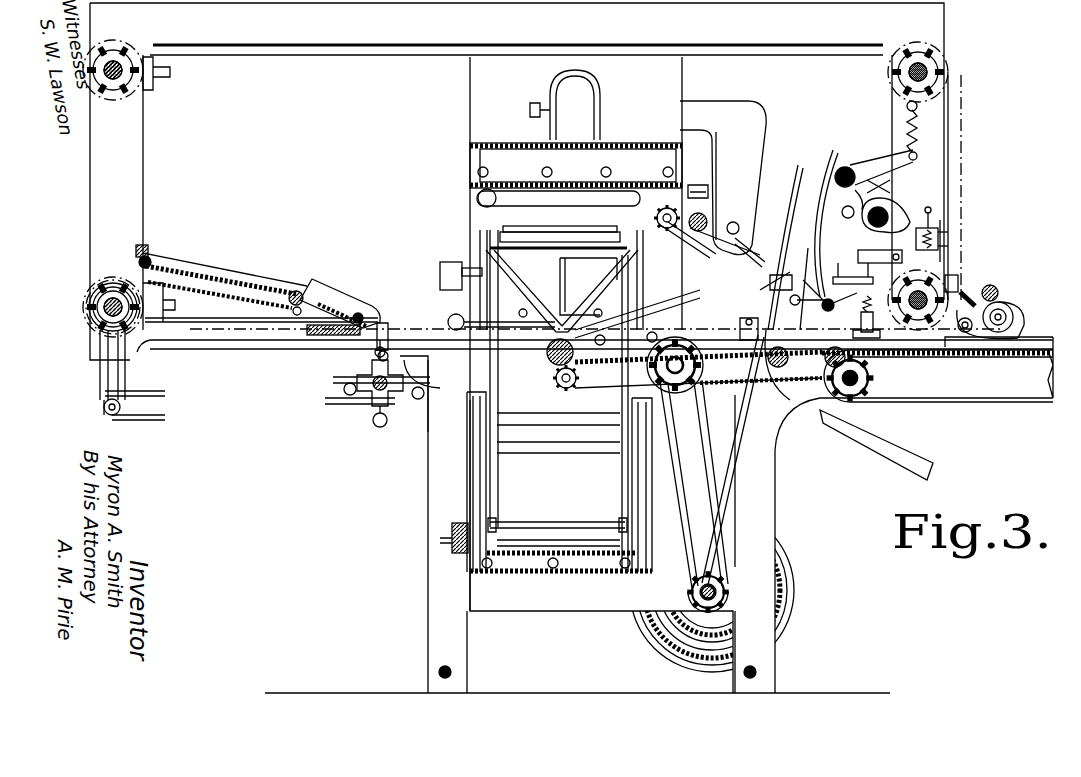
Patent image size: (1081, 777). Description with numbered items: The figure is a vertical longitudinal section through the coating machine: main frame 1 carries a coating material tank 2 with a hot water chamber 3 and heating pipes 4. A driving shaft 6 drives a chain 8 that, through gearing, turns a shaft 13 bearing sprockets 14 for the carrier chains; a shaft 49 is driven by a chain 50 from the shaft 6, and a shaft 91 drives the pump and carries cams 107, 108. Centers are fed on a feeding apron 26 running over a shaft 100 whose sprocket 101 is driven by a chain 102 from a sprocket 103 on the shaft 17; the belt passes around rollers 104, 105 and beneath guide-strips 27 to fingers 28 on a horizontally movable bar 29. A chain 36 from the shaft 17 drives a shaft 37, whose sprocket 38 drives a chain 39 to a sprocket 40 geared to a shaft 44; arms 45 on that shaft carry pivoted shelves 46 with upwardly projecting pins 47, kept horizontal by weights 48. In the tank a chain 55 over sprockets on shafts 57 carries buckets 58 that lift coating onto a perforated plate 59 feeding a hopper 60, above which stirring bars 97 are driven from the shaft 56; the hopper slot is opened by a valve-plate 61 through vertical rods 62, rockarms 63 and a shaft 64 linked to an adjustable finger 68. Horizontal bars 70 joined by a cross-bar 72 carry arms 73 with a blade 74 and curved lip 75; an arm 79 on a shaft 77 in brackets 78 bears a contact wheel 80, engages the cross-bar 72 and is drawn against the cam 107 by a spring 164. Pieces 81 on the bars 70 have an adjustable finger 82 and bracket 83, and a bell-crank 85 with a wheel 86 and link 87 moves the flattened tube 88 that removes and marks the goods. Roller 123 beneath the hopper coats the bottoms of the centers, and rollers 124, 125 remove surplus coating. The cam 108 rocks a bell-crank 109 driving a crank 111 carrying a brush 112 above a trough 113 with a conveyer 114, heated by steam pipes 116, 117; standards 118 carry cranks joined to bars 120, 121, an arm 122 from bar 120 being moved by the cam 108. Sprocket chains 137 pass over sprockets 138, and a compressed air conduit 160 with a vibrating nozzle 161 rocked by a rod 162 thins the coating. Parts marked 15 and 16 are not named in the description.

The main frame 1 is at (571, 348).
The coating material tank 2 is at (496, 514).
The hot water chamber 3 is at (470, 473).
The heating pipes 4 is at (505, 570).
The driving shaft 6 is at (728, 592).
The chain 8 is at (712, 460).
The shaft 13 is at (955, 264).
The sprockets 14 is at (115, 45).
The shaft 15 is at (906, 78).
The shaft 16 is at (104, 72).
The shaft 17 is at (104, 307).
The feeding apron 26 is at (240, 292).
The guide-strips 27 is at (334, 293).
The fingers 28 is at (388, 328).
The horizontally movable bar 29 is at (330, 350).
The chain 36 is at (100, 382).
The shaft 37 is at (130, 420).
The second sprocket 38 is at (104, 408).
The chain 39 is at (160, 393).
The sprocket 40 is at (372, 406).
The shaft 44 is at (395, 402).
The arms 45 is at (428, 358).
The shelves 46 is at (371, 378).
The upwardly projecting pins 47 is at (344, 392).
The weights 48 is at (382, 428).
The shaft 49 is at (706, 221).
The chain 50 is at (698, 185).
The chain 55 is at (636, 236).
The shaft 56 is at (446, 264).
The shafts 57 is at (561, 492).
The buckets 58 is at (576, 232).
The perforated plate 59 is at (562, 291).
The hopper 60 is at (580, 286).
The valve-plate 61 is at (558, 324).
The vertical rods 62 is at (588, 269).
The rockarms 63 is at (610, 269).
The shaft 64 is at (610, 230).
The adjustable finger 68 is at (759, 332).
The horizontal bars 70 is at (768, 358).
The cross-bar 72 is at (828, 311).
The arms 73 is at (606, 329).
The blade 74 is at (678, 345).
The curved lip 75 is at (548, 354).
The shaft 77 is at (842, 168).
The brackets 78 is at (890, 188).
The arm 79 is at (822, 202).
The contact wheel 80 is at (868, 166).
The pieces 81 is at (805, 306).
The adjustable finger 82 is at (778, 280).
The adjustable bracket 83 is at (874, 320).
The bell-crank 85 is at (822, 386).
The wheel 86 is at (805, 280).
The link 87 is at (914, 294).
The flattened tube 88 is at (886, 364).
The shaft 91 is at (886, 208).
The stirring bars 97 is at (515, 297).
The shaft 100 is at (150, 260).
The sprocket 101 is at (138, 250).
The driving chain 102 is at (108, 275).
The sprocket 103 is at (98, 294).
The roller 104 is at (297, 290).
The roller 105 is at (359, 313).
The cam 107 is at (926, 224).
The cam 108 is at (948, 230).
The bell-crank 109 is at (948, 245).
The crank 111 is at (958, 282).
The brush 112 is at (1002, 292).
The trough 113 is at (1020, 338).
The conveyer 114 is at (1023, 305).
The steam pipe 116 is at (966, 334).
The steam pipe 117 is at (978, 295).
The standards 118 is at (873, 281).
The bar 120 is at (752, 248).
The bar 121 is at (796, 182).
The arm 122 is at (880, 247).
The roller 123 is at (556, 380).
The roller 124 is at (705, 392).
The roller 125 is at (764, 376).
The sprocket chains 137 is at (937, 367).
The sprockets 138 is at (870, 380).
The conduit 160 is at (648, 162).
The restricted nozzle 161 is at (740, 400).
The rod 162 is at (760, 240).
The spring 164 is at (908, 133).